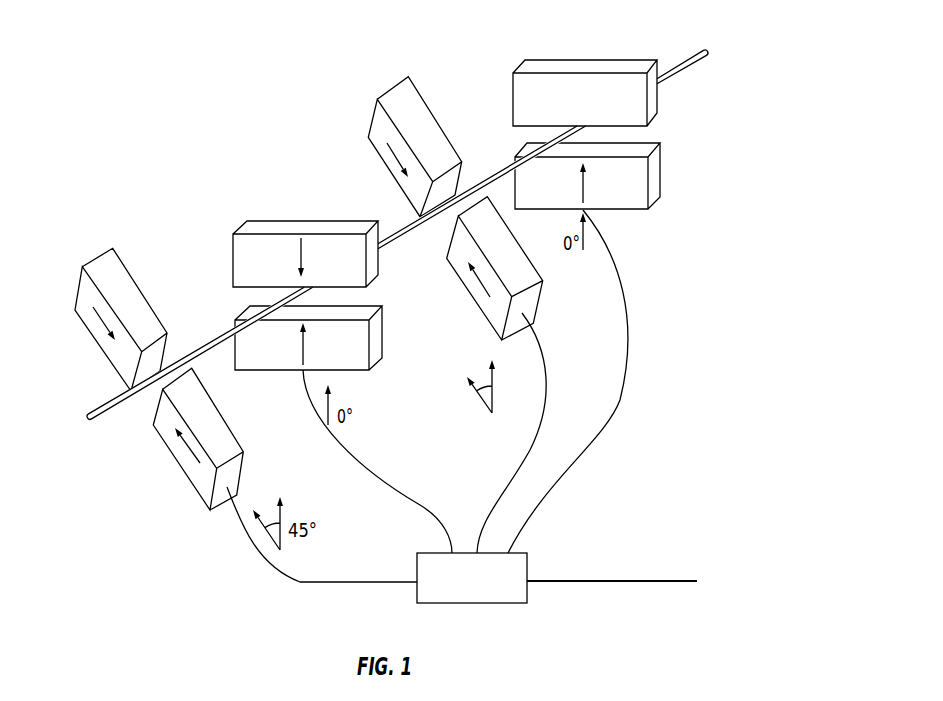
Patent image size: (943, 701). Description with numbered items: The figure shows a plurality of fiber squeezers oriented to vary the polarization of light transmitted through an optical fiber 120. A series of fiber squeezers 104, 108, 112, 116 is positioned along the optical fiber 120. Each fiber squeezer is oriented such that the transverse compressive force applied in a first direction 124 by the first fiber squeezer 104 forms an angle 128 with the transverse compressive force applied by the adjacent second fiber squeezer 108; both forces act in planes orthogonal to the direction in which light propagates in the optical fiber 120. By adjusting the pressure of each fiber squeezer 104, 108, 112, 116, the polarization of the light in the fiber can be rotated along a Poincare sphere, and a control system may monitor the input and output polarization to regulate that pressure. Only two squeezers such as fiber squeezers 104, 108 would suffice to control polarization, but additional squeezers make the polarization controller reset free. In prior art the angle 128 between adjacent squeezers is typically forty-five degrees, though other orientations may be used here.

The first fiber squeezer 104 is at (113, 248).
The second fiber squeezer 108 is at (247, 221).
The fiber squeezer 112 is at (377, 99).
The fiber squeezer 116 is at (525, 60).
The optical fiber 120 is at (88, 426).
The first direction 124 is at (302, 252).
The angle 128 is at (482, 383).